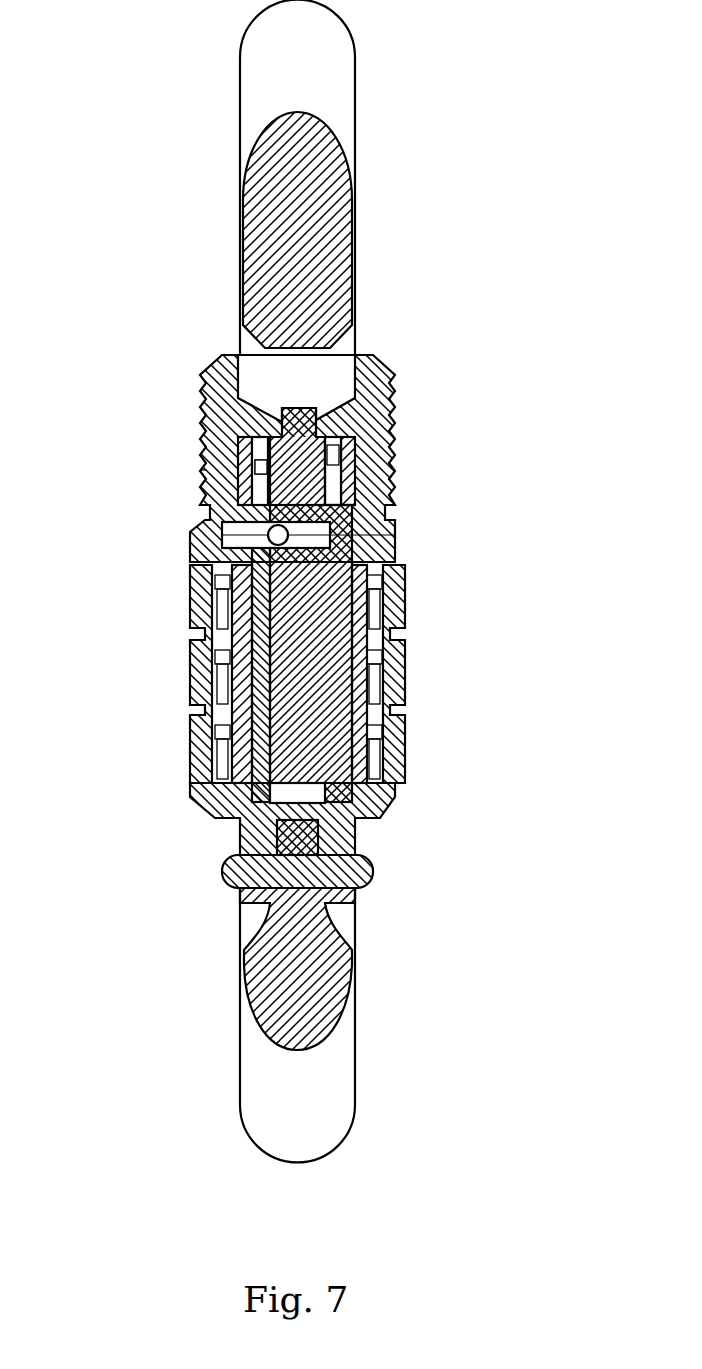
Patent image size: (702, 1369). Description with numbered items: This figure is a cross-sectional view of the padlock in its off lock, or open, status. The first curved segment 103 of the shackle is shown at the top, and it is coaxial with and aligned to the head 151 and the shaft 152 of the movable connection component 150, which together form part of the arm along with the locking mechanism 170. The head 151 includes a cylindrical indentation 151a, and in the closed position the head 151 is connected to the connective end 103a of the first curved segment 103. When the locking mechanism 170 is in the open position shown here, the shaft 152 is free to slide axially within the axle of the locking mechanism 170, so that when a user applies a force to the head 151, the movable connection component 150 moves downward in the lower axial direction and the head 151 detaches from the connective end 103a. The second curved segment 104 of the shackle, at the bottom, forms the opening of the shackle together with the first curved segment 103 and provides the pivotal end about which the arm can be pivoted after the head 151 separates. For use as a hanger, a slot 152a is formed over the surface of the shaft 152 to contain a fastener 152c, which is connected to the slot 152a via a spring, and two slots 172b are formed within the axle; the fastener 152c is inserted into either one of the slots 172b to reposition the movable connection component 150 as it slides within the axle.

The first curved segment 103 is at (330, 64).
The connective end 103a is at (325, 243).
The cylindrical indentation 151a is at (348, 379).
The head 151 is at (373, 420).
The fastener 152c is at (367, 470).
The movable connection component 150 is at (487, 437).
The slot 152a is at (330, 538).
The shaft 152 is at (317, 677).
The slots 172b is at (262, 467).
The locking mechanism 170 is at (171, 730).
The second curved segment 104 is at (335, 1092).